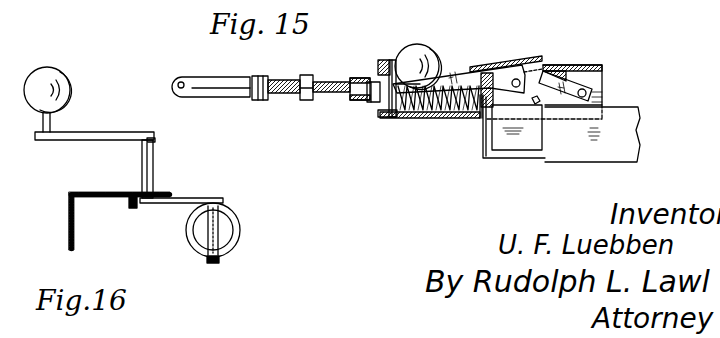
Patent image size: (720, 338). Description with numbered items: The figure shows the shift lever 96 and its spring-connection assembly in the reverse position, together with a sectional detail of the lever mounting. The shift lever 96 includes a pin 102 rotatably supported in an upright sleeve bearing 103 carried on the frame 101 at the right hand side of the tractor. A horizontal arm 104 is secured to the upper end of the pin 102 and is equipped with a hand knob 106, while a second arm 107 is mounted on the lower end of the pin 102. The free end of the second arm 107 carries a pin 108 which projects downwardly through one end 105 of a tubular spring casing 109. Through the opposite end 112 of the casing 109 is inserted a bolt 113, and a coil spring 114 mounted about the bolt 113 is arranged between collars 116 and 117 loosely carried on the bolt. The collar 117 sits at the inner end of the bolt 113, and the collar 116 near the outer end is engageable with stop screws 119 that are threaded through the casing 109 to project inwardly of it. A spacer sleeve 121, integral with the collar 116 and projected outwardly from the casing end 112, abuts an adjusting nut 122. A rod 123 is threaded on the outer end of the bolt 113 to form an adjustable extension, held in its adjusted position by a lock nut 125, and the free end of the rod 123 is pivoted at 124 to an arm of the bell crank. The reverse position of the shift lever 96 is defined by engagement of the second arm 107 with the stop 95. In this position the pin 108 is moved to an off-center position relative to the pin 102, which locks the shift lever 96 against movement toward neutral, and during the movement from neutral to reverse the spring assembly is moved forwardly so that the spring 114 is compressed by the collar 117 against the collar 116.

In FIG. 16, the stop 95 is at (130, 207).
In FIG. 15, the stop 95 is at (537, 103).
In FIG. 16, the shift lever 96 is at (80, 129).
In FIG. 15, the shift lever 96 is at (477, 62).
In FIG. 16, the frame 101 is at (77, 192).
In FIG. 15, the frame 101 is at (626, 132).
In FIG. 16, the pin 102 is at (157, 139).
In FIG. 15, the pin 102 is at (515, 88).
In FIG. 16, the upright sleeve bearing 103 is at (153, 160).
In FIG. 16, the horizontal arm 104 is at (112, 135).
In FIG. 15, the horizontal arm 104 is at (460, 72).
In FIG. 15, the casing end 105 is at (603, 90).
In FIG. 16, the hand knob 106 is at (50, 80).
In FIG. 15, the hand knob 106 is at (421, 55).
In FIG. 16, the second arm 107 is at (178, 203).
In FIG. 15, the second arm 107 is at (585, 91).
In FIG. 16, the pin 108 is at (220, 220).
In FIG. 15, the pin 108 is at (581, 89).
In FIG. 16, the tubular spring casing 109 is at (240, 238).
In FIG. 15, the tubular spring casing 109 is at (448, 118).
In FIG. 15, the casing end 112 is at (384, 60).
In FIG. 15, the bolt 113 is at (285, 80).
In FIG. 15, the coil spring 114 is at (438, 98).
In FIG. 15, the collar 116 is at (379, 102).
In FIG. 15, the collar 117 is at (515, 79).
In FIG. 15, the stop screws 119 is at (392, 60).
In FIG. 15, the spacer sleeve 121 is at (362, 78).
In FIG. 15, the adjusting nut 122 is at (307, 100).
In FIG. 15, the rod 123 is at (229, 90).
In FIG. 15, the pivot 124 is at (179, 81).
In FIG. 15, the lock nut 125 is at (262, 100).